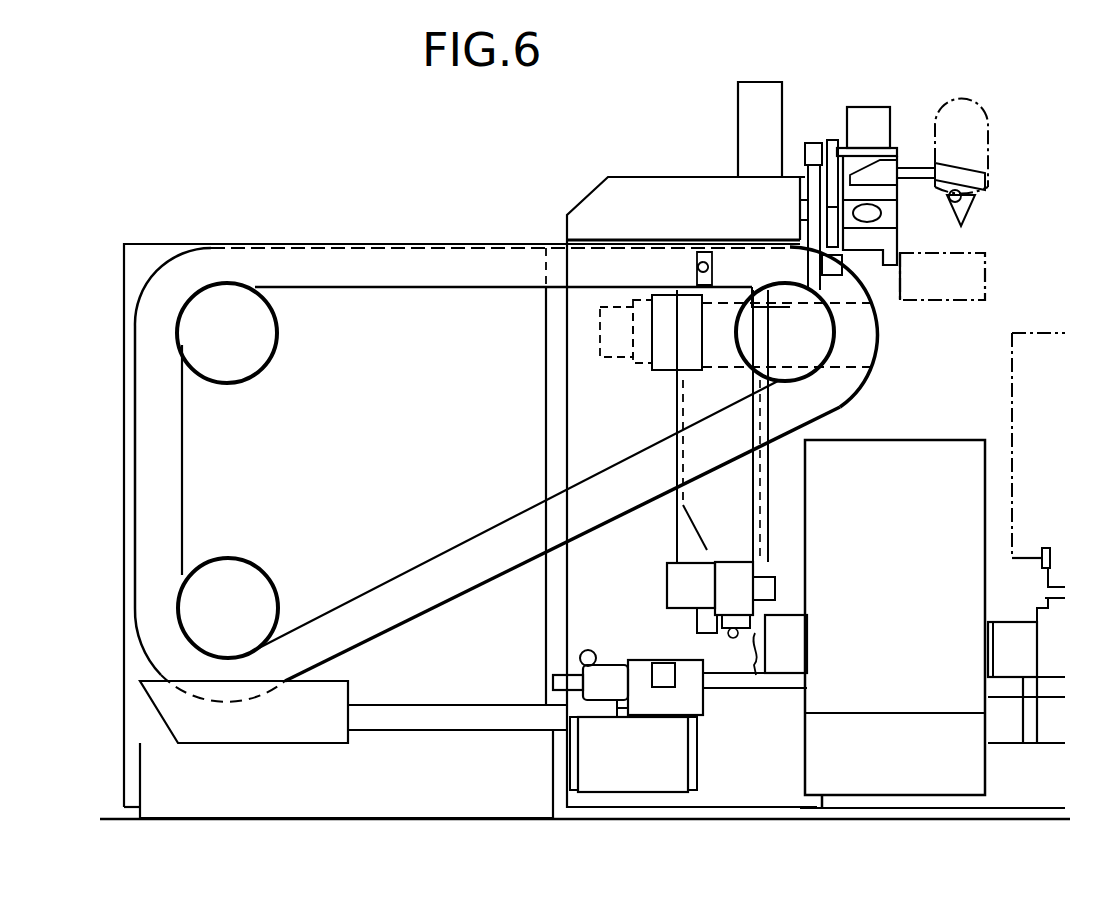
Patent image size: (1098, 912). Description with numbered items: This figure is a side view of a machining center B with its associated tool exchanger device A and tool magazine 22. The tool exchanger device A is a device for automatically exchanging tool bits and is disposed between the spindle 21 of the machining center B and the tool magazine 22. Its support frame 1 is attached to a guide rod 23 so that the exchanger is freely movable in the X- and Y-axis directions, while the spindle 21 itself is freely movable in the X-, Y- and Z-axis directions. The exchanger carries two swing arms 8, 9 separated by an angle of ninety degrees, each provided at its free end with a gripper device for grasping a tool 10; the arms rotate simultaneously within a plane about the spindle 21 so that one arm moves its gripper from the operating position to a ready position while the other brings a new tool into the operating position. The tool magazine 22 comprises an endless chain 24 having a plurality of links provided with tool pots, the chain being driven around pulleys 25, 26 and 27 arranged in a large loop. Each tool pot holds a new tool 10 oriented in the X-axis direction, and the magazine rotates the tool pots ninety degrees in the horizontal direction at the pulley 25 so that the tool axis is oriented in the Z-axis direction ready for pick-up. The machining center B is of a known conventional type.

The support frame 1 is at (873, 150).
The swing arm 8 is at (892, 229).
The swing arm 9 is at (912, 168).
The tool 10 is at (990, 165).
The spindle 21 is at (882, 340).
The tool magazine 22 is at (441, 244).
The guide rod 23 is at (796, 172).
The endless chain 24 is at (496, 522).
The pulley 25 is at (680, 390).
The pulley 26 is at (264, 326).
The pulley 27 is at (248, 583).
The tool exchanger device A is at (878, 100).
The machining center B is at (658, 166).